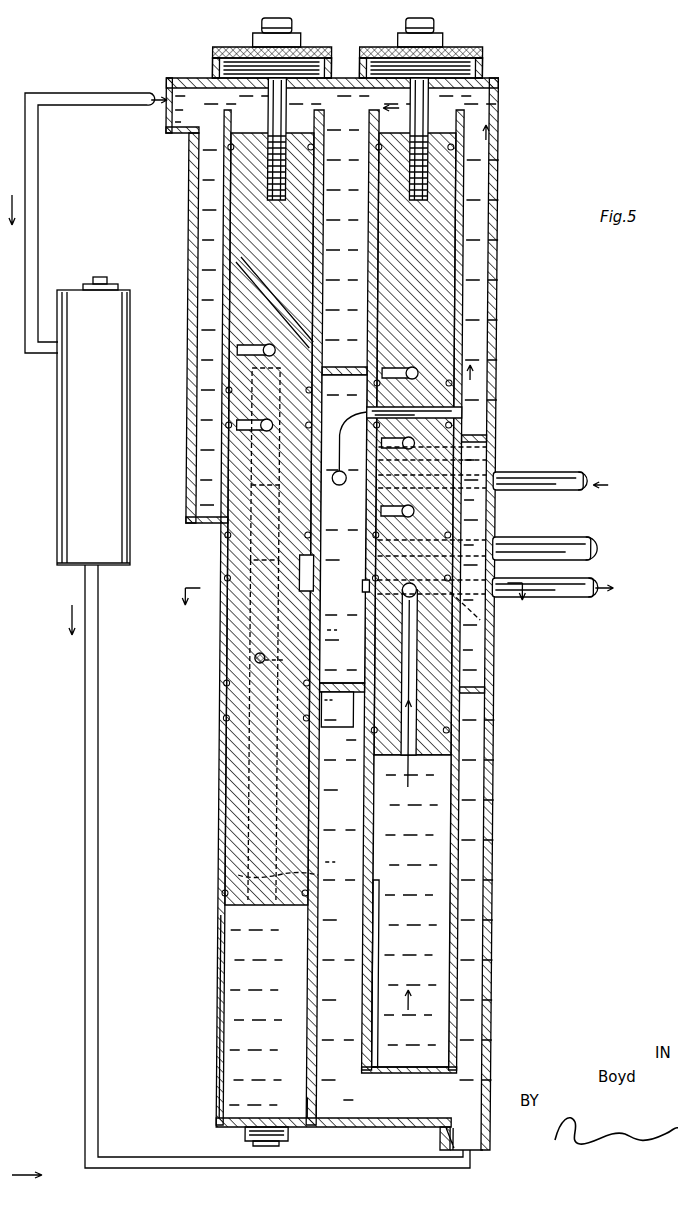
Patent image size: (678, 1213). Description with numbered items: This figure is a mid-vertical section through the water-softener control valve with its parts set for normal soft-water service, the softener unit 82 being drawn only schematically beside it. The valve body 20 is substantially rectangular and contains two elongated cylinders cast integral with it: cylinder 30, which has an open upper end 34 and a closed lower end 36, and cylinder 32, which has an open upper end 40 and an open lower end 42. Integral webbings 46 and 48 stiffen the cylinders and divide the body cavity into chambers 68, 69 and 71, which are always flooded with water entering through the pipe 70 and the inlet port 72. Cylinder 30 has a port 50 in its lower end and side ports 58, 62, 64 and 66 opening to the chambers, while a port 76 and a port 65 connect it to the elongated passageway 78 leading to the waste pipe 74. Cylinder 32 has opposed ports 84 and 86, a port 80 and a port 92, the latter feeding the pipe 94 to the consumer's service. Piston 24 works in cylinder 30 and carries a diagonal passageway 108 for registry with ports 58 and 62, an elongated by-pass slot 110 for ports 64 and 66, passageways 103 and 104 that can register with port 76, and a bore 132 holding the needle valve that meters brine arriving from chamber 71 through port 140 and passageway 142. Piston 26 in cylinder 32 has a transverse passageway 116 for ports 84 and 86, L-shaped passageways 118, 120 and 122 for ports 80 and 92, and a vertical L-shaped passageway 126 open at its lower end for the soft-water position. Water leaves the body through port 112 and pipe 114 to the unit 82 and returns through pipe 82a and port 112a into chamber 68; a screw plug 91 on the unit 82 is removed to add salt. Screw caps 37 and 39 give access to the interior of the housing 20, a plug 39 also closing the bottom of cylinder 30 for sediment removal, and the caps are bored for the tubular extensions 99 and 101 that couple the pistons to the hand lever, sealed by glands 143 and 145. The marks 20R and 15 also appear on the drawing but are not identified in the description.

The valve body 20 is at (499, 851).
The retaining nuts 20R is at (455, 162).
The piston 24 is at (240, 238).
The piston valve 26 is at (440, 220).
The cylinder 30 is at (235, 930).
The cylinder 32 is at (440, 940).
The open upper end 34 is at (230, 128).
The closed lower end 36 is at (229, 1110).
The screw cap 37 is at (220, 47).
The screw plug 39 is at (468, 47).
The open upper end 40 is at (452, 112).
The open lower end 42 is at (430, 1060).
The integral webbing 46 is at (353, 372).
The integral webbing 48 is at (342, 715).
The port 50 is at (318, 1110).
The port 58 is at (224, 500).
The port 62 is at (317, 610).
The port 64 is at (318, 674).
The port 65 is at (245, 875).
The port 66 is at (337, 709).
The chamber 68 is at (487, 176).
The chamber 69 is at (487, 663).
The pipe 70 is at (578, 480).
The chamber 71 is at (477, 761).
The port 72 is at (337, 486).
The waste fluid pipe 74 is at (584, 540).
The port 76 is at (225, 556).
The elongated passageway 78 is at (228, 650).
The port 80 is at (368, 586).
The softener unit 82 is at (93, 427).
The pipe 82a is at (30, 205).
The port 84 is at (370, 412).
The port 86 is at (455, 412).
The screw plug 91 is at (93, 282).
The port 92 is at (483, 618).
The pipe 94 is at (575, 588).
The tubular extension 99 is at (284, 26).
The tubular extension 101 is at (434, 35).
The passageway 103 is at (240, 425).
The passageway 104 is at (240, 350).
The passageway 108 is at (250, 290).
The elongated slot 110 is at (313, 568).
The port 112 is at (476, 1145).
The port 112a is at (172, 78).
The pipe 114 is at (98, 812).
The passageway 116 is at (430, 420).
The L-shaped passageway 118 is at (406, 375).
The L-shaped passageway 120 is at (416, 448).
The L-shaped passageway 122 is at (418, 492).
The L-shaped passageway 126 is at (416, 705).
The bore 132 is at (260, 660).
The port 140 is at (337, 857).
The passageway 142 is at (339, 627).
The gland 143 is at (262, 30).
The gland 145 is at (405, 38).
The section line 15 is at (350, 599).